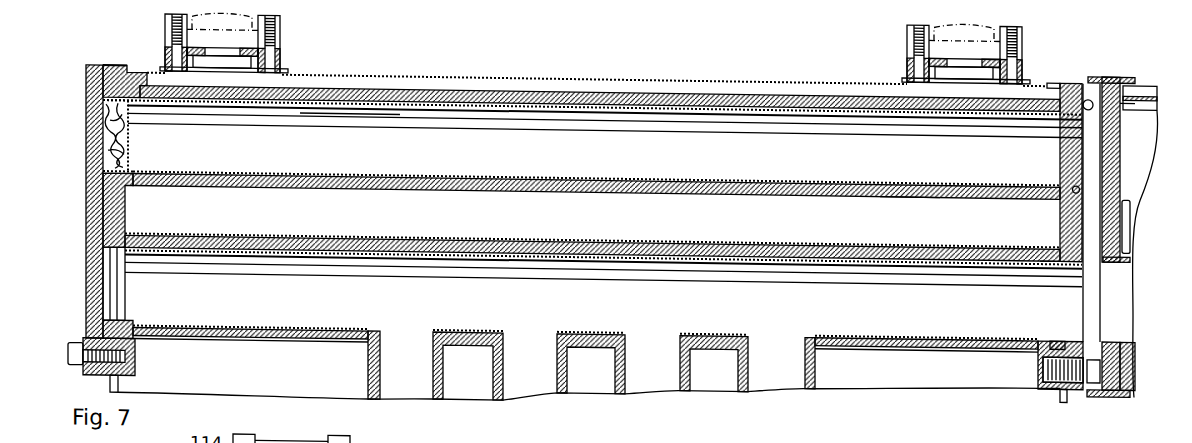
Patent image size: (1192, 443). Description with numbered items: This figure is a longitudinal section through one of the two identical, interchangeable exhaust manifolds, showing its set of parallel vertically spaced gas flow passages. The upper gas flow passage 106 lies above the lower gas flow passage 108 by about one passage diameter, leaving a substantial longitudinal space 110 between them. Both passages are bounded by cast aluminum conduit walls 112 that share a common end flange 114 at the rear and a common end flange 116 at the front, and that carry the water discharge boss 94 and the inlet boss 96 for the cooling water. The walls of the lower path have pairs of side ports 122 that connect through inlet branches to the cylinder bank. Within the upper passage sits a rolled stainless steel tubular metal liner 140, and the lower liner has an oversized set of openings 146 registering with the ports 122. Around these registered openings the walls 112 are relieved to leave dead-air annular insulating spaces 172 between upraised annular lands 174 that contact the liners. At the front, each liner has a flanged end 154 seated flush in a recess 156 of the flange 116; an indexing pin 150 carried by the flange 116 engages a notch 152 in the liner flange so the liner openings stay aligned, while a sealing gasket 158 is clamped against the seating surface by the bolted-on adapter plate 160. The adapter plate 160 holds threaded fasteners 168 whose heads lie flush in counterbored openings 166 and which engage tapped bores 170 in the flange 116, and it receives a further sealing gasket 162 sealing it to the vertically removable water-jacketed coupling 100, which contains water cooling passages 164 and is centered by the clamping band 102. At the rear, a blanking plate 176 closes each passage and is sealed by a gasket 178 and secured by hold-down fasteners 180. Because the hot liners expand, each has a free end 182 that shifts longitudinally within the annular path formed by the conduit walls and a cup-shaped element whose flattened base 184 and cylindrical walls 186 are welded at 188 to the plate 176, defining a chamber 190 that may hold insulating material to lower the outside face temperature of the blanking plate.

The water discharge boss 94 is at (283, 46).
The inlet boss 96 is at (905, 51).
The water-jacketed coupling 100 is at (1134, 181).
The clamping band 102 is at (1097, 62).
The upper gas flow passage 106 is at (368, 108).
The lower gas flow passage 108 is at (267, 324).
The longitudinal space 110 is at (373, 203).
The conduit walls 112 is at (557, 180).
The rear end flange 114 is at (112, 72).
The front end flange 116 is at (1072, 68).
The side ports 122 is at (430, 322).
The tubular metal liner 140 is at (908, 185).
The liner openings 146 is at (377, 323).
The indexing pin 150 is at (1077, 333).
The notch 152 is at (1092, 330).
The flanged end 154 is at (1070, 172).
The recess 156 is at (1075, 238).
The sealing gasket 158 is at (1088, 98).
The adapter plate 160 is at (1102, 172).
The sealing gasket 162 is at (1112, 95).
The water cooling passages 164 is at (1160, 81).
The counterbored openings 166 is at (1123, 255).
The threaded fasteners 168 is at (1042, 351).
The tapped bores 170 is at (1048, 359).
The annular insulating spaces 172 is at (670, 178).
The annular lands 174 is at (807, 324).
The blanking plate 176 is at (88, 152).
The gasket 178 is at (109, 65).
The hold-down fasteners 180 is at (78, 360).
The free end 182 is at (139, 212).
The flattened base 184 is at (130, 137).
The cylindrical walls 186 is at (110, 170).
The weld 188 is at (102, 98).
The chamber 190 is at (115, 122).